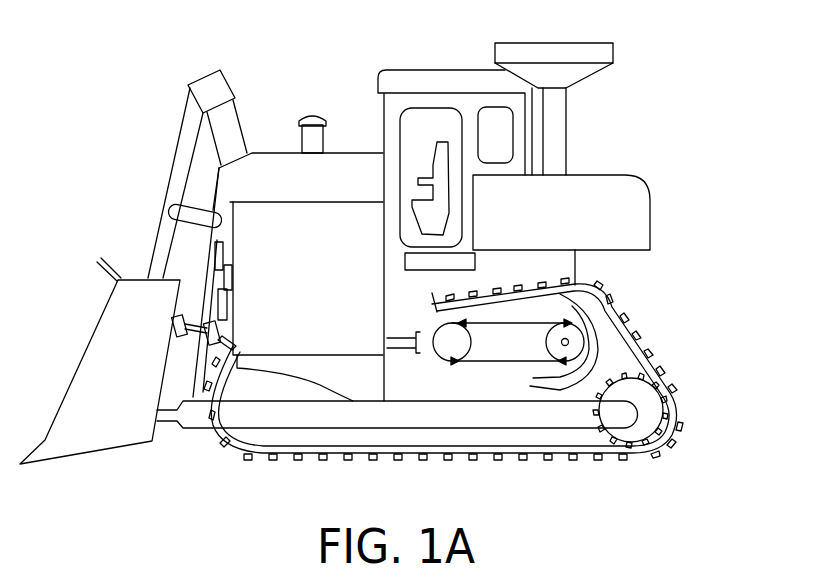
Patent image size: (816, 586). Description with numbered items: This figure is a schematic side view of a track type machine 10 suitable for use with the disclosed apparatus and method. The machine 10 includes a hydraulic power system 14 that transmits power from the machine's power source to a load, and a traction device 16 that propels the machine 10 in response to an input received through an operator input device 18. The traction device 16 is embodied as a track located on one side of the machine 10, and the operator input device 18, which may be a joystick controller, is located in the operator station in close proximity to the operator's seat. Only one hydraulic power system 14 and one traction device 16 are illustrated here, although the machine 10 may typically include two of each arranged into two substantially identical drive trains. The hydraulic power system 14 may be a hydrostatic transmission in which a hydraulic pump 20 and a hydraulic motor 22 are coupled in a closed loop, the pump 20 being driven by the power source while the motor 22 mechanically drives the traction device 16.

The machine 10 is at (637, 140).
The hydraulic power system 14 is at (502, 378).
The traction device 16 is at (617, 310).
The operator input device 18 is at (427, 178).
The hydraulic pump 20 is at (443, 365).
The hydraulic motor 22 is at (547, 340).